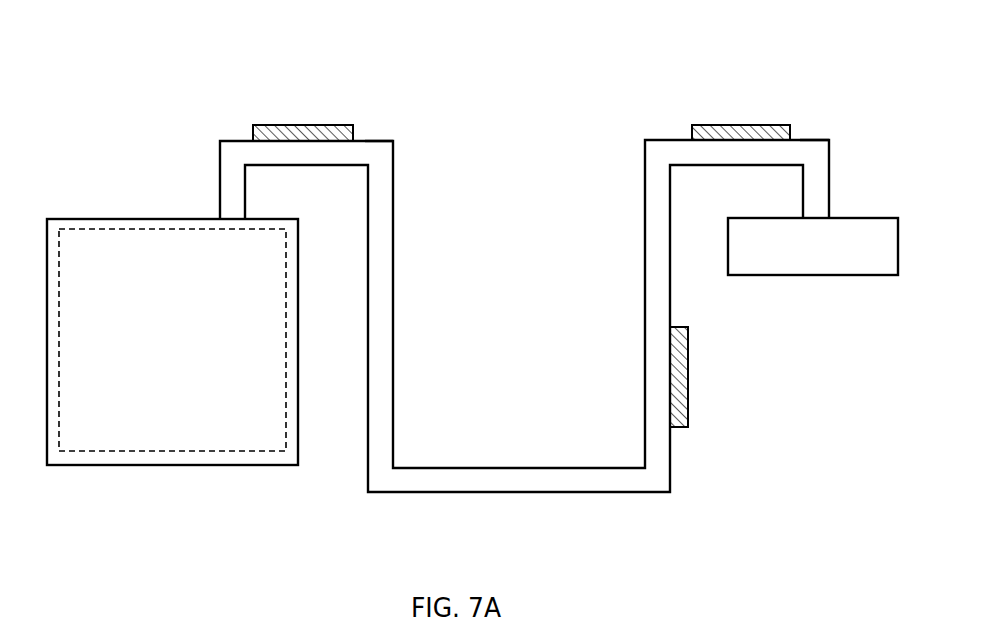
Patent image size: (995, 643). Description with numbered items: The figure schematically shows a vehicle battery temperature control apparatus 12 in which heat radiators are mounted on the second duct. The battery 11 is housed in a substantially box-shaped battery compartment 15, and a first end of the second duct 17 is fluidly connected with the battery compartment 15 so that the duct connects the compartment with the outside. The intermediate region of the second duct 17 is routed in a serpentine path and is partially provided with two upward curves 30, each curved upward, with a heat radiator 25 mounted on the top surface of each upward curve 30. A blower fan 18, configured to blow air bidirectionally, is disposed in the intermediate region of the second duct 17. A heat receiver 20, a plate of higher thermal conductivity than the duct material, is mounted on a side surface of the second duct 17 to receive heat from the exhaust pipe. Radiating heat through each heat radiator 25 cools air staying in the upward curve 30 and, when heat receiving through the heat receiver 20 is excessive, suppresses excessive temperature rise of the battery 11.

The battery 11 is at (115, 458).
The cooling device 12 is at (489, 68).
The battery compartment 15 is at (197, 466).
The second duct 17 is at (497, 492).
The blower fan 18 is at (898, 243).
The heat receiver 20 is at (688, 388).
The heat radiator 25 is at (310, 125).
The upward curve 30 is at (378, 141).